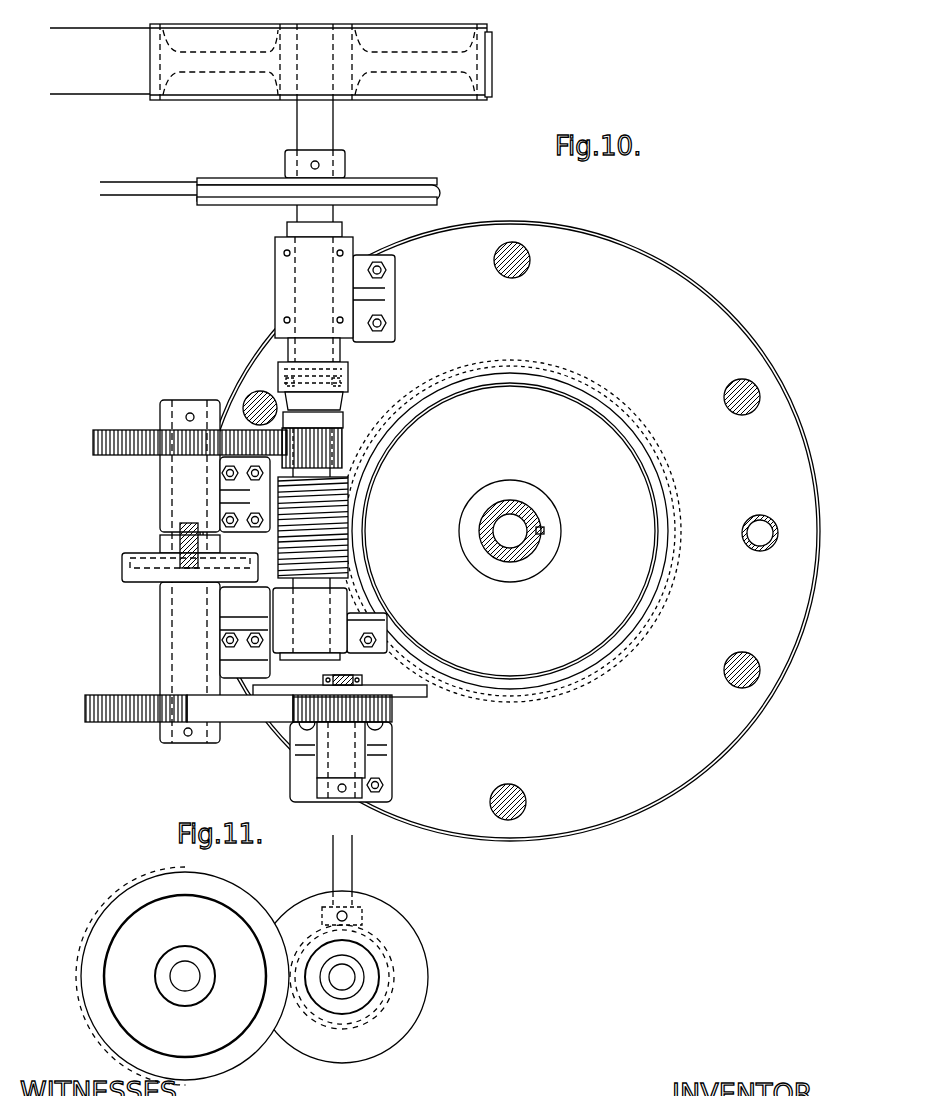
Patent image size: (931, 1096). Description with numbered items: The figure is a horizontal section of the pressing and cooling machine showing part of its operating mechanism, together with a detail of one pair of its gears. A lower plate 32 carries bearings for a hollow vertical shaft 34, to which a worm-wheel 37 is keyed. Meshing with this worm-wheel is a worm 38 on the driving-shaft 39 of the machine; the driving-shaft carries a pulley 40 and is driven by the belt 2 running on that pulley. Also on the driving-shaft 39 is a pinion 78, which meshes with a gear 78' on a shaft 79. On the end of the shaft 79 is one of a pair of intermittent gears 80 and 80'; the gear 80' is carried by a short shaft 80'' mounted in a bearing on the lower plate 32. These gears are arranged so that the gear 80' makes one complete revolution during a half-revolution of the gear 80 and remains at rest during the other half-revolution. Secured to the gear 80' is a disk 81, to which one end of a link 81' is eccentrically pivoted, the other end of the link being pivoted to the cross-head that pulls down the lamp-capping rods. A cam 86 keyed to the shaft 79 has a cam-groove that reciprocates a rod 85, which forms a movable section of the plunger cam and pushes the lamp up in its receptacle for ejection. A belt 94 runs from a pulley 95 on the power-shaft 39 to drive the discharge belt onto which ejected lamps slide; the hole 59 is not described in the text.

In FIG. 10, the belt 2 is at (100, 85).
In FIG. 10, the pulley 40 is at (460, 108).
In FIG. 10, the belt 94 is at (157, 200).
In FIG. 10, the pulley 95 is at (230, 205).
In FIG. 10, the driving-shaft 39 is at (328, 345).
In FIG. 10, the pinion 78 is at (328, 435).
In FIG. 10, the gear 78' is at (168, 432).
In FIG. 10, the shaft 79 is at (160, 493).
In FIG. 11, the shaft 79 is at (181, 983).
In FIG. 10, the rod 85 is at (186, 523).
In FIG. 10, the cam 86 is at (120, 573).
In FIG. 10, the worm 38 is at (332, 525).
In FIG. 10, the hollow vertical shaft 34 is at (497, 555).
In FIG. 10, the hole 59 is at (742, 529).
In FIG. 10, the worm-wheel 37 is at (510, 531).
In FIG. 10, the lower plate 32 is at (510, 531).
In FIG. 10, the intermittent gear 80 is at (185, 726).
In FIG. 11, the intermittent gear 80 is at (182, 966).
In FIG. 10, the intermittent gear 80' is at (366, 719).
In FIG. 11, the intermittent gear 80' is at (375, 977).
In FIG. 10, the short shaft 80'' is at (337, 776).
In FIG. 11, the short shaft 80'' is at (409, 977).
In FIG. 10, the disk 81 is at (340, 683).
In FIG. 11, the disk 81 is at (342, 971).
In FIG. 10, the link 81' is at (353, 673).
In FIG. 11, the link 81' is at (326, 880).